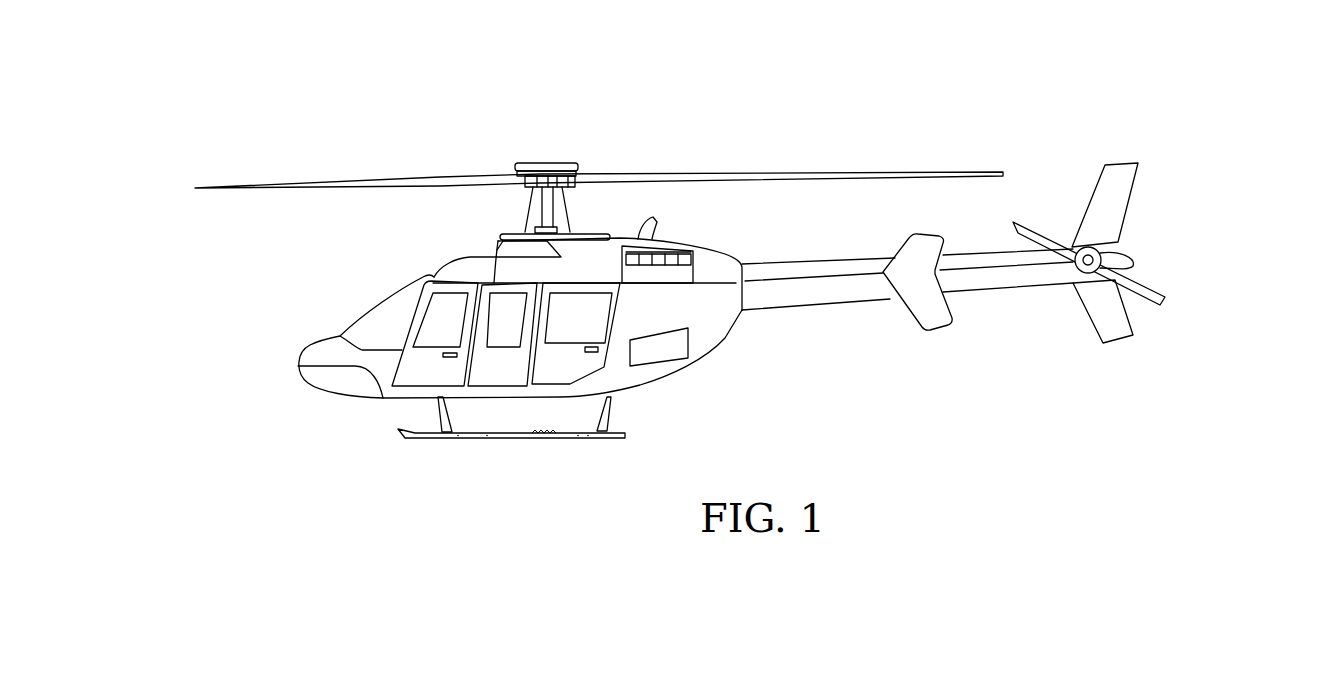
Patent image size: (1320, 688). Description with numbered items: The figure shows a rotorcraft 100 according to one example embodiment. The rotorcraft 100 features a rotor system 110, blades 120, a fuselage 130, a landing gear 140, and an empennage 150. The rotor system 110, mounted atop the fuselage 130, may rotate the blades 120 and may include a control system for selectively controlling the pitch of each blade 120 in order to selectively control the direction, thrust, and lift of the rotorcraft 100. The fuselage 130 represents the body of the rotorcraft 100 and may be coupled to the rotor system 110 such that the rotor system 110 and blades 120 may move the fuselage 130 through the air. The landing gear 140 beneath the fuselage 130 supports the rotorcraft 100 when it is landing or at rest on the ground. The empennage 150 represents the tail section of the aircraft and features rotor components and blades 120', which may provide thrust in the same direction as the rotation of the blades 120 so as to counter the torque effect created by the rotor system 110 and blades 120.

The rotorcraft 100 is at (394, 121).
The rotor system 110 is at (548, 162).
The blades 120 is at (599, 151).
The blades 120' is at (1130, 253).
The fuselage 130 is at (340, 394).
The landing gear 140 is at (490, 439).
The empennage 150 is at (821, 302).